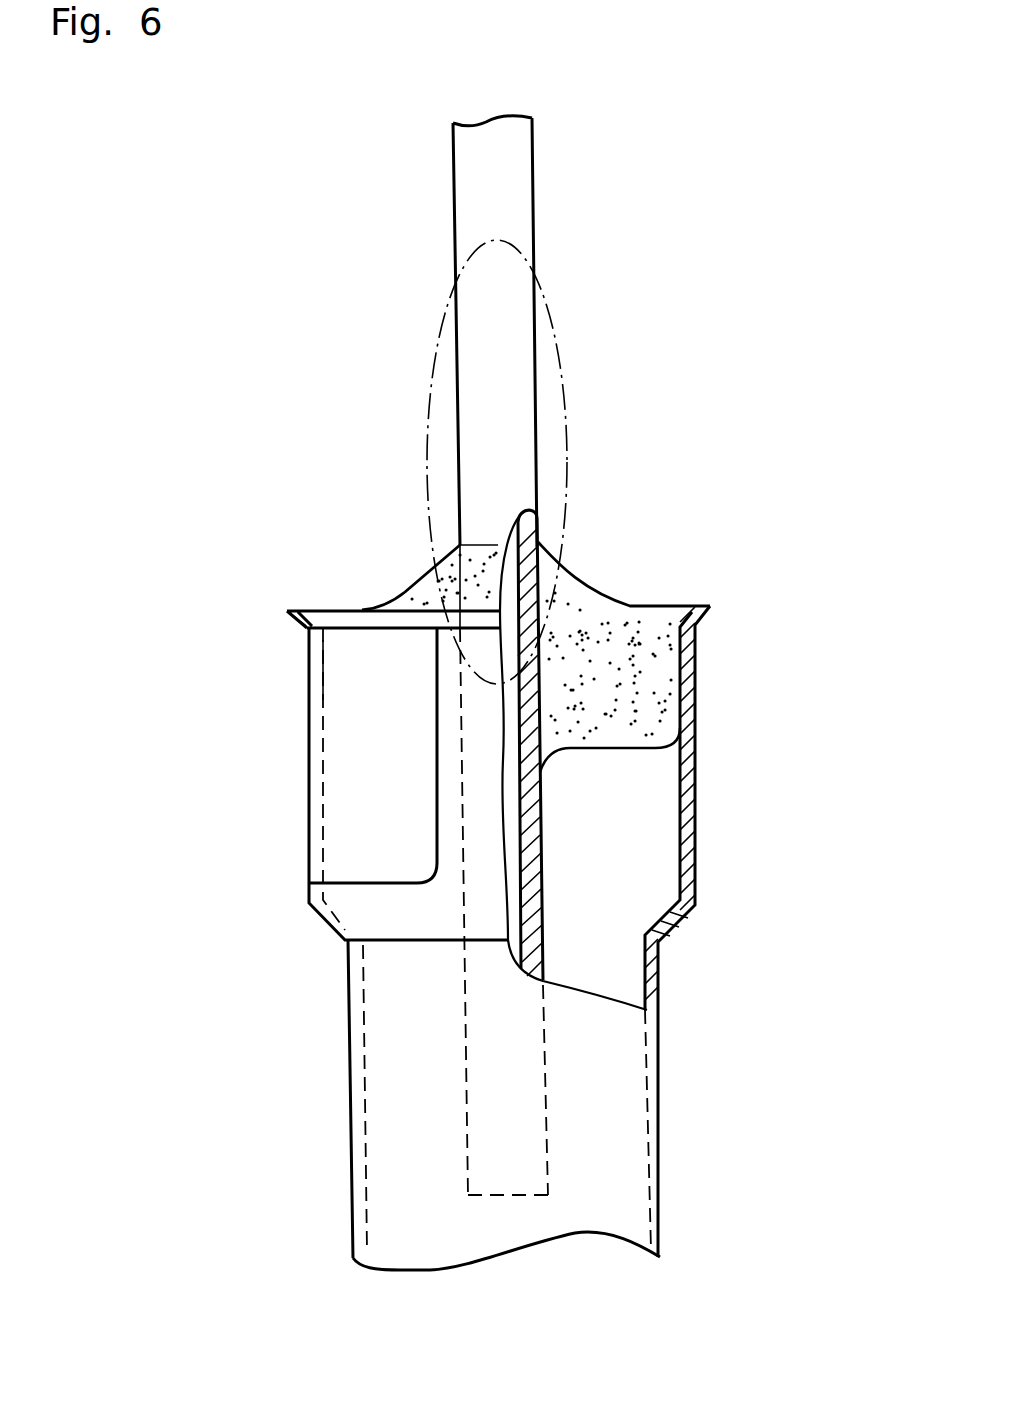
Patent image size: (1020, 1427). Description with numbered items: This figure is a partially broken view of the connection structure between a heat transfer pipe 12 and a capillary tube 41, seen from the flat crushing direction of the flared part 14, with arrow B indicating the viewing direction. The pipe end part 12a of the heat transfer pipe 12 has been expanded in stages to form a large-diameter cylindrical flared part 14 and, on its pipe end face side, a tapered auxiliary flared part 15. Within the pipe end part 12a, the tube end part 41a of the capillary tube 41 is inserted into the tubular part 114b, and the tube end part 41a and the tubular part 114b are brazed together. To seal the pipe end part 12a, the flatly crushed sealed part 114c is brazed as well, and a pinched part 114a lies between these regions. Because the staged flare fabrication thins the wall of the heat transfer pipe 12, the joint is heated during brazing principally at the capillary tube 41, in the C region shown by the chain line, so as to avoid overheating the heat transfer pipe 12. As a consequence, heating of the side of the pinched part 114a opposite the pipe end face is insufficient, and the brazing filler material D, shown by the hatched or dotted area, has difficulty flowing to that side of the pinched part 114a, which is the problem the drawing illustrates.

The capillary tube 41 is at (551, 184).
The tube end part 41a is at (462, 888).
The C region C is at (568, 362).
The brazing filler material D is at (420, 600).
The heat transfer pipe 12 is at (694, 1195).
The pipe end part 12a is at (684, 1071).
The flared part 14 is at (228, 806).
The auxiliary flared part 15 is at (292, 615).
The pinched part 114a is at (277, 638).
The tubular part 114b is at (460, 700).
The sealed part 114c is at (335, 805).
The insertion direction B is at (172, 764).